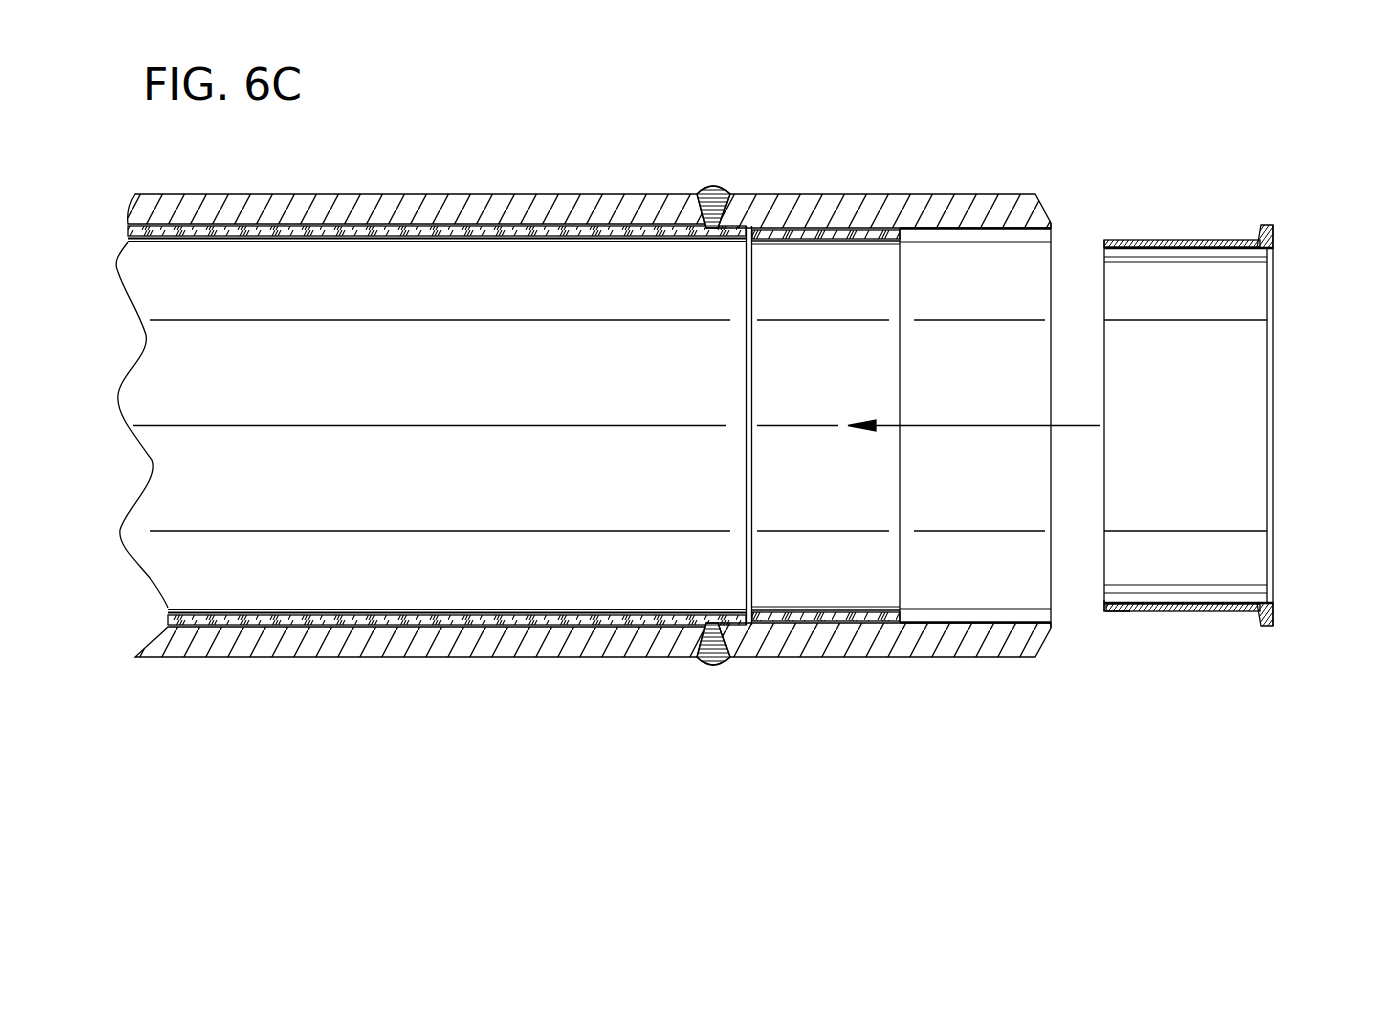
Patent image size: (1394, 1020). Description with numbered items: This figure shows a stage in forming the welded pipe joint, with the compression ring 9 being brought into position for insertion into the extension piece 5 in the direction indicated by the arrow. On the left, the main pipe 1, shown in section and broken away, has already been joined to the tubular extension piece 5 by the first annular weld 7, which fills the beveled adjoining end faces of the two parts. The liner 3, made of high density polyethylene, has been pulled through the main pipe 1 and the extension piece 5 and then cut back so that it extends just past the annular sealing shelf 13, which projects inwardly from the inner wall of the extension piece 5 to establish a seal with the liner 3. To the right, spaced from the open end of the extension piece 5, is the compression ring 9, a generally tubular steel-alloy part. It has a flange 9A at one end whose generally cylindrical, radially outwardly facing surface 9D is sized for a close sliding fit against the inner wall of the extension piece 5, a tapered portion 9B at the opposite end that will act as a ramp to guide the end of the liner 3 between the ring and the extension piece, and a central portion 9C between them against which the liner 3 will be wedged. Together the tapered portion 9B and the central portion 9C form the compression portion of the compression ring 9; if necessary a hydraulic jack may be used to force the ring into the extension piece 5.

The main pipe 1 is at (487, 193).
The liner 3 is at (223, 610).
The extension piece 5 is at (888, 660).
The first annular weld 7 is at (712, 663).
The compression ring 9 is at (1237, 408).
The flange 9A is at (1273, 238).
The tapered portion 9B is at (1108, 609).
The central portion 9C is at (1208, 610).
The radially outwardly facing surface 9D is at (1266, 224).
The sealing shelf 13 is at (866, 608).